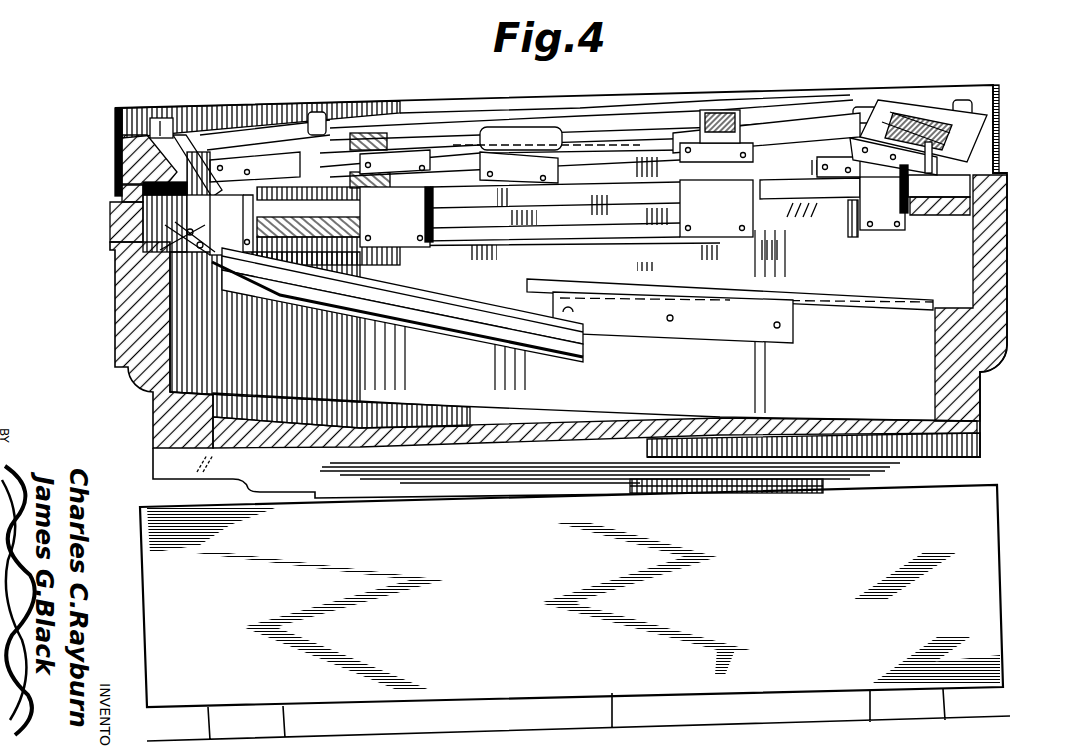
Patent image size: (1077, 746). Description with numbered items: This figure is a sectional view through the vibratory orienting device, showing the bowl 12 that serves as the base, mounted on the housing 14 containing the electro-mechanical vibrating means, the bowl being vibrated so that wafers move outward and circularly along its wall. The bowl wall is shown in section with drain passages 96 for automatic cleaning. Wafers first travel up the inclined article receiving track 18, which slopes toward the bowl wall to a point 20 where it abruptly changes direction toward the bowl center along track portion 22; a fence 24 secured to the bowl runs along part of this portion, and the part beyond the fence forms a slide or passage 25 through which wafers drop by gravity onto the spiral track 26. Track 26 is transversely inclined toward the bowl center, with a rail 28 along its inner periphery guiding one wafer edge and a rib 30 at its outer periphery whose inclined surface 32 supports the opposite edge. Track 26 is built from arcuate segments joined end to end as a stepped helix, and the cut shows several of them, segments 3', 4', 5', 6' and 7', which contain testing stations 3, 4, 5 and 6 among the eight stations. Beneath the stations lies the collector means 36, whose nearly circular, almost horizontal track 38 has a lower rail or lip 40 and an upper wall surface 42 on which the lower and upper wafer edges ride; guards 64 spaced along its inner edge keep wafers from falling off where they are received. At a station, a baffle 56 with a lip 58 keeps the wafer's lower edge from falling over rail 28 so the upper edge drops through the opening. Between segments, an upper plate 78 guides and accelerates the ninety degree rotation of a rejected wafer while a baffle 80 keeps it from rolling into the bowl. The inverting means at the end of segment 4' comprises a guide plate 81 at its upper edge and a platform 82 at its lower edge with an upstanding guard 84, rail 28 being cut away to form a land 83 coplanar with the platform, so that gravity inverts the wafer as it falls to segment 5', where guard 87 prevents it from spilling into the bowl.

The orientation testing station 3 is at (918, 137).
The arcuate segment 3' is at (1006, 129).
The orientation testing station 4 is at (720, 107).
The arcuate segment 4' is at (591, 104).
The orientation testing station 5 is at (505, 129).
The arcuate segment 5' is at (395, 129).
The orientation testing station 6 is at (174, 110).
The arcuate segment 6' is at (265, 133).
The arcuate segment 7' is at (130, 155).
The bowl 12 is at (970, 396).
The housing 14 is at (987, 568).
The article receiving track 18 is at (360, 388).
The point 20 is at (735, 286).
The track portion 22 is at (643, 287).
The fence 24 is at (643, 327).
The slide or passage 25 is at (530, 298).
The spiral track 26 is at (460, 330).
The rail 28 is at (248, 293).
The rib 30 is at (208, 200).
The inclined surface 32 is at (213, 228).
The collector means 36 is at (848, 232).
The track 38 is at (115, 238).
The lower rail or lip 40 is at (160, 257).
The upper wall surface 42 is at (118, 205).
The baffle 56 is at (713, 160).
The lip 58 is at (760, 143).
The guards 64 is at (435, 200).
The upper plate 78 is at (318, 112).
The baffle 80 is at (332, 222).
The guide plate 81 is at (528, 108).
The platform 82 is at (483, 147).
The land 83 is at (580, 142).
The upstanding guard 84 is at (558, 130).
The guard 87 is at (557, 163).
The drain passages 96 is at (217, 447).